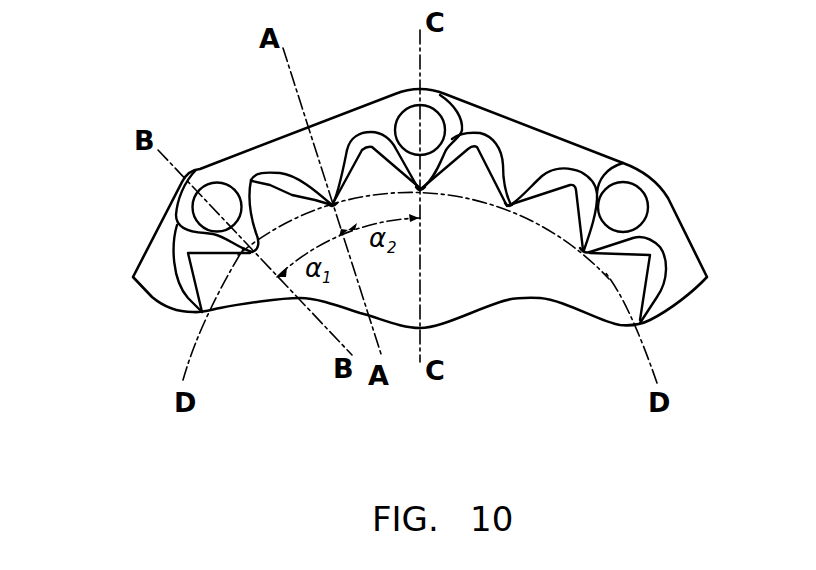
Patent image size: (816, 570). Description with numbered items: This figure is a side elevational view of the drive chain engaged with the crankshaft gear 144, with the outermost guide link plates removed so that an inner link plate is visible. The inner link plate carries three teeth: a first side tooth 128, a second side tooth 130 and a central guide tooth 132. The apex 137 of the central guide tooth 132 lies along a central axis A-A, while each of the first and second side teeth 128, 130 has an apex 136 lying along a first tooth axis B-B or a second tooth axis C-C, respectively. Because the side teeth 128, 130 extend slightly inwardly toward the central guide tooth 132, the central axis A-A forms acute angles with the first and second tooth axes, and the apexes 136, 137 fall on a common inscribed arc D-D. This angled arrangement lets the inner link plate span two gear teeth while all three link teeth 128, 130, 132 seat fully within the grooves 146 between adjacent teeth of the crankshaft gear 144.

The first side tooth 128 is at (195, 297).
The second side tooth 130 is at (455, 175).
The central guide tooth 132 is at (249, 181).
The apex 136 is at (238, 255).
The apex 137 is at (333, 190).
The crankshaft gear 144 is at (470, 301).
The grooves 146 is at (187, 233).